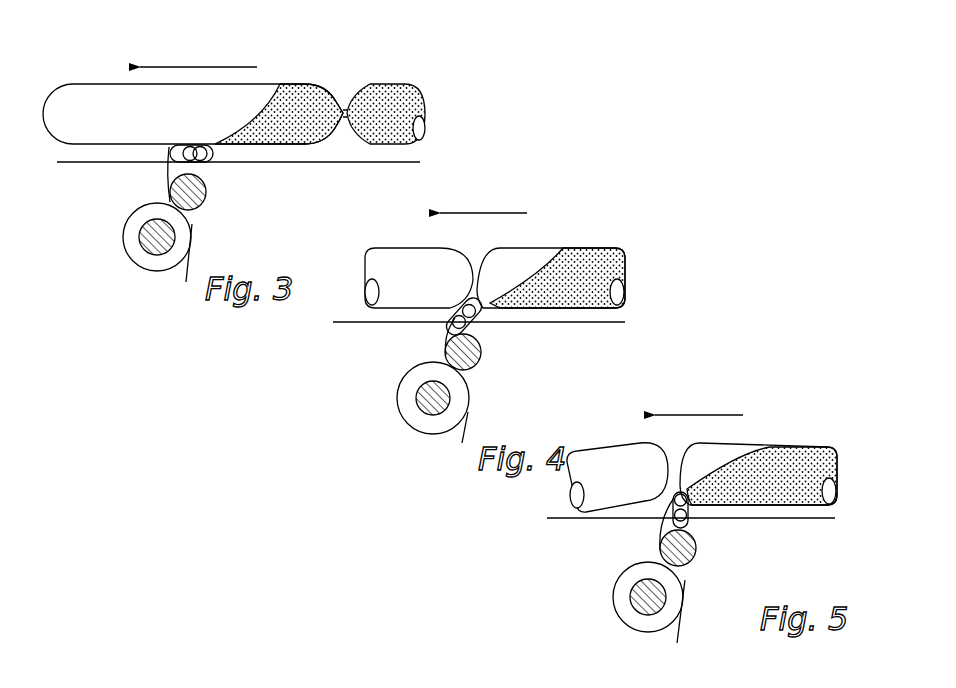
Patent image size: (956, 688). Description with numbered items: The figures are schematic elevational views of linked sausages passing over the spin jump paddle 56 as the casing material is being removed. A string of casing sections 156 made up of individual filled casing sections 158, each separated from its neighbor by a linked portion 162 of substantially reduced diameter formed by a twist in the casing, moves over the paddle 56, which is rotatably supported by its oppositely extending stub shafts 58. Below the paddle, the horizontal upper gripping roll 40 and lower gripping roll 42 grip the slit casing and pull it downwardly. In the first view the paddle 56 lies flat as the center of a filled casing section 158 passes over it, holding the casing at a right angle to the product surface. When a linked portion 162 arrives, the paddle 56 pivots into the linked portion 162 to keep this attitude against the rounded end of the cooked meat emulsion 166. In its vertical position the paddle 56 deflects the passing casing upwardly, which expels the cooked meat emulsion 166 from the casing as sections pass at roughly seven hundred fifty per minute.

In FIG. 3, the upper gripping roll 40 is at (200, 206).
In FIG. 4, the upper gripping roll 40 is at (473, 367).
In FIG. 5, the upper gripping roll 40 is at (684, 562).
In FIG. 3, the lower gripping roll 42 is at (165, 225).
In FIG. 4, the lower gripping roll 42 is at (441, 395).
In FIG. 5, the lower gripping roll 42 is at (657, 583).
In FIG. 3, the spin jump paddle 56 is at (205, 160).
In FIG. 4, the spin jump paddle 56 is at (478, 318).
In FIG. 5, the spin jump paddle 56 is at (688, 505).
In FIG. 3, the stub shafts 58 is at (213, 162).
In FIG. 4, the stub shafts 58 is at (470, 325).
In FIG. 5, the stub shafts 58 is at (686, 516).
In FIG. 3, the string of casing sections 156 is at (265, 58).
In FIG. 4, the string of casing sections 156 is at (533, 235).
In FIG. 5, the string of casing sections 156 is at (738, 437).
In FIG. 3, the filled casing section 158 is at (278, 86).
In FIG. 4, the filled casing section 158 is at (552, 250).
In FIG. 5, the filled casing section 158 is at (757, 462).
In FIG. 3, the linked portion 162 is at (343, 108).
In FIG. 3, the cooked meat emulsion 166 is at (83, 93).
In FIG. 4, the cooked meat emulsion 166 is at (413, 255).
In FIG. 5, the cooked meat emulsion 166 is at (618, 452).